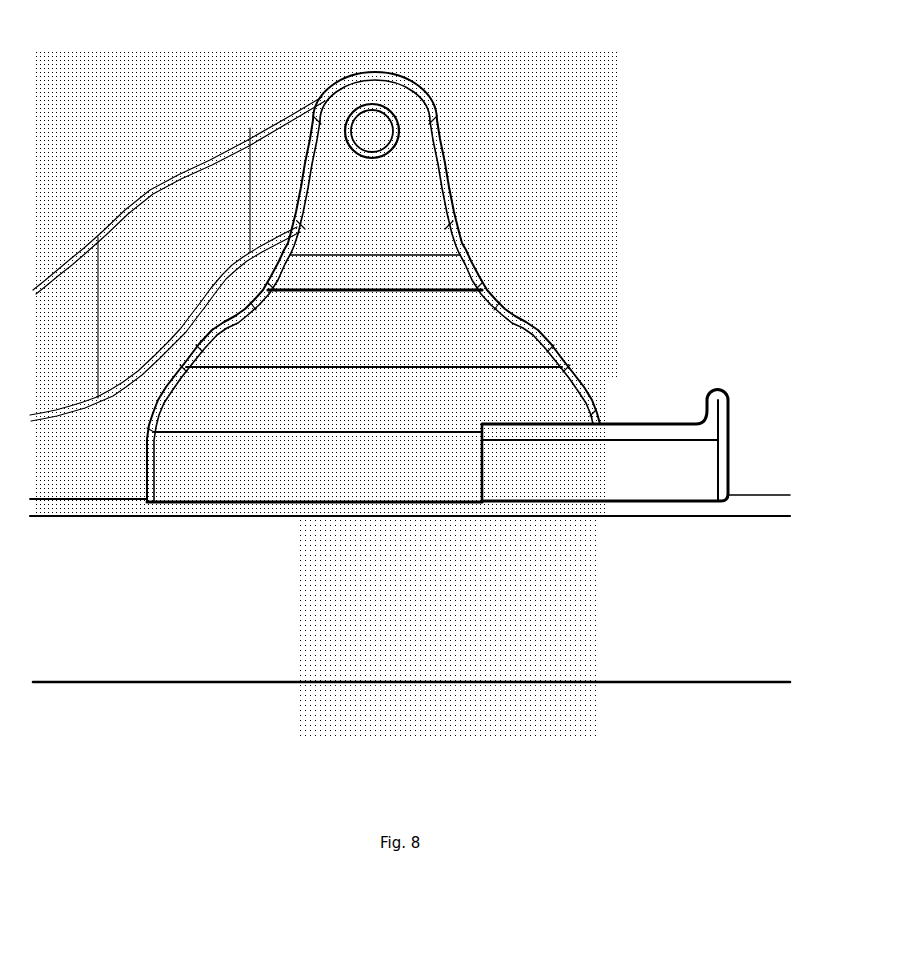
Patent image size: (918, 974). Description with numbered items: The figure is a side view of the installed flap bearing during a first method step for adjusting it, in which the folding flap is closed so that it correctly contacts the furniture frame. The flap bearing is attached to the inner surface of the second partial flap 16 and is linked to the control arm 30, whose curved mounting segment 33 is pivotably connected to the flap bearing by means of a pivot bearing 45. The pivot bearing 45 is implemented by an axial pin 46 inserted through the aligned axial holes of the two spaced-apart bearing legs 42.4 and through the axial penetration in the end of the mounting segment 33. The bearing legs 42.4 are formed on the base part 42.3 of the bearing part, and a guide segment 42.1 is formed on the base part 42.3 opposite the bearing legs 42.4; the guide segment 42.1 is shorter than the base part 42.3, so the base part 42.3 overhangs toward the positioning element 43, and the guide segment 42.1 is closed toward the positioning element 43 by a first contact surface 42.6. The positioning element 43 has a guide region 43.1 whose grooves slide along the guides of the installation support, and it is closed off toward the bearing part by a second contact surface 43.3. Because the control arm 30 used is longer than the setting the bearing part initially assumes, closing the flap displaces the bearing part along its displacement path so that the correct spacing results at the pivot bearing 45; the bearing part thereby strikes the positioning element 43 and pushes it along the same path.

The second partial flap 16 is at (557, 655).
The control arm 30 is at (118, 150).
The mounting segment 33 is at (197, 193).
The guide segment 42.1 is at (177, 477).
The base part 42.3 is at (473, 330).
The bearing legs 42.4 is at (405, 178).
The first contact surface 42.6 is at (490, 473).
The positioning element 43 is at (700, 460).
The guide region 43.1 is at (680, 471).
The second contact surface 43.3 is at (480, 465).
The pivot bearing 45 is at (402, 132).
The axial pin 46 is at (437, 105).